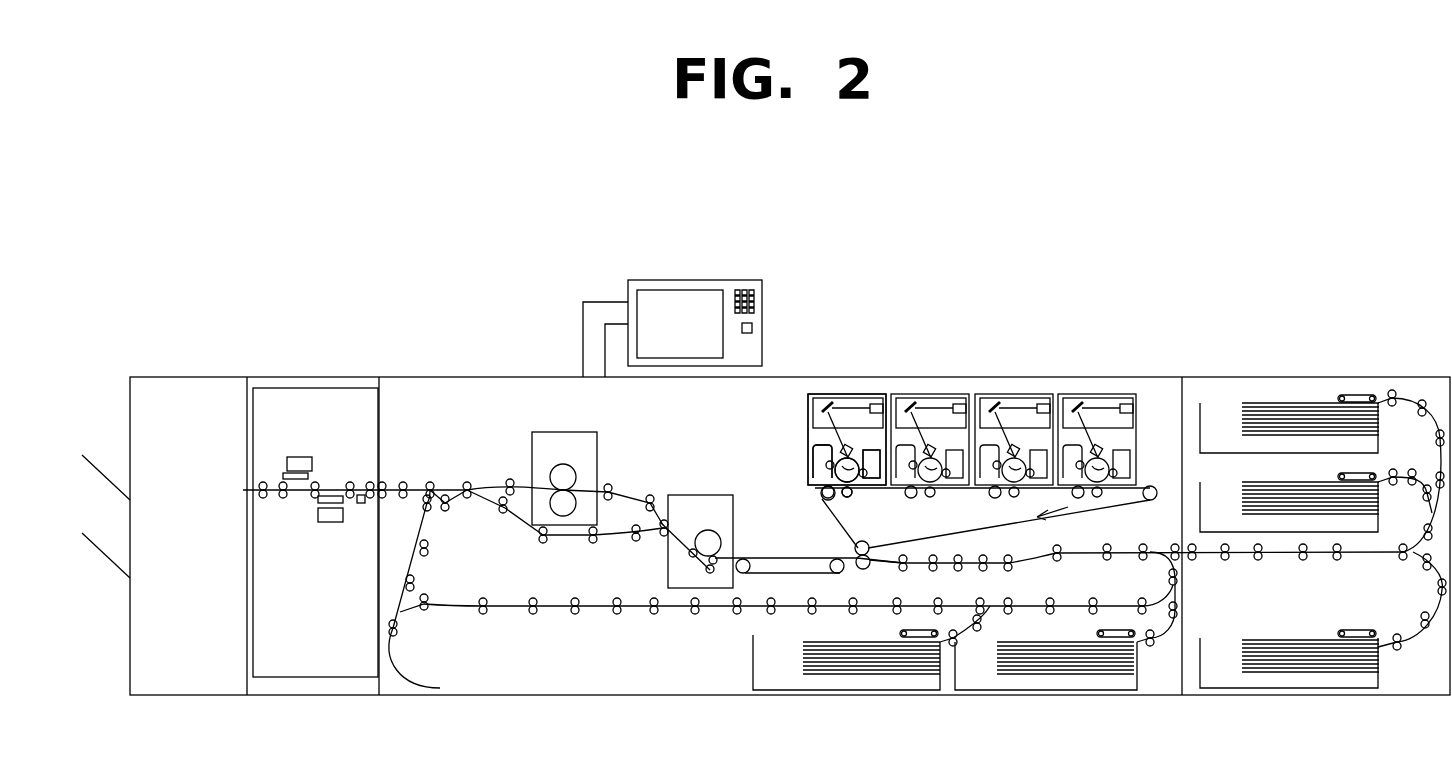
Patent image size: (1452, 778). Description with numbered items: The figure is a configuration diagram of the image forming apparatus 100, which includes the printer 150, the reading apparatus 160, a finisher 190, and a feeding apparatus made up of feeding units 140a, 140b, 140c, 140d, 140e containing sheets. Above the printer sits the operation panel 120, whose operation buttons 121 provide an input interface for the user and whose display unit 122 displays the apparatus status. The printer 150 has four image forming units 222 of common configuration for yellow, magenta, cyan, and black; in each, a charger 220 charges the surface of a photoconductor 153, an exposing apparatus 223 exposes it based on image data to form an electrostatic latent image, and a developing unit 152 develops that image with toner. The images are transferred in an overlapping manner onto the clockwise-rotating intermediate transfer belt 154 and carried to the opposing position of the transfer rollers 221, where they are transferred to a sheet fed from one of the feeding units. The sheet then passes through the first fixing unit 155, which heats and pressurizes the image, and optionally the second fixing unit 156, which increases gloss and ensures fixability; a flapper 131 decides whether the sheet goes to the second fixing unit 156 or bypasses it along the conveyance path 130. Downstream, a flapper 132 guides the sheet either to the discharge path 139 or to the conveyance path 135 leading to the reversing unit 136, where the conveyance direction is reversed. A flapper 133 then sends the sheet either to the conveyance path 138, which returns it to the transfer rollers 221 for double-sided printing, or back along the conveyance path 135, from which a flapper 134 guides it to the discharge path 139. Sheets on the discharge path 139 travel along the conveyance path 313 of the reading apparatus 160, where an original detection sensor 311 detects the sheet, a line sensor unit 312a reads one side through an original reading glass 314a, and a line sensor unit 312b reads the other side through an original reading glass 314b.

The image forming apparatus 100 is at (1030, 222).
The operation panel 120 is at (722, 280).
The operation buttons 121 is at (760, 301).
The display unit 122 is at (665, 290).
The conveyance path 130 is at (546, 540).
The flapper 131 is at (662, 530).
The flapper 132 is at (464, 487).
The flapper 133 is at (424, 604).
The flapper 134 is at (445, 508).
The conveyance path 135 is at (432, 560).
The reversing unit 136 is at (417, 683).
The conveyance path 138 is at (557, 610).
The discharge path 139 is at (400, 487).
The feeding unit 140a is at (838, 695).
The feeding unit 140b is at (1010, 695).
The feeding unit 140c is at (1258, 403).
The feeding unit 140d is at (1250, 482).
The feeding unit 140e is at (1283, 695).
The printer 150 is at (1075, 393).
The developing unit 152 is at (810, 457).
The photoconductor 153 is at (810, 480).
The intermediate transfer belt 154 is at (970, 530).
The first fixing unit 155 is at (715, 495).
The second fixing unit 156 is at (575, 432).
The reading apparatus 160 is at (323, 388).
The finisher 190 is at (217, 377).
The charger 220 is at (853, 450).
The transfer rollers 221 is at (863, 570).
The image forming units 222 is at (877, 494).
The exposing apparatus 223 is at (881, 393).
The original detection sensor 311 is at (358, 493).
The line sensor unit 312a is at (297, 480).
The line sensor unit 312b is at (300, 456).
The conveyance path 313 is at (270, 481).
The original reading glass 314a is at (343, 500).
The original reading glass 314b is at (328, 522).